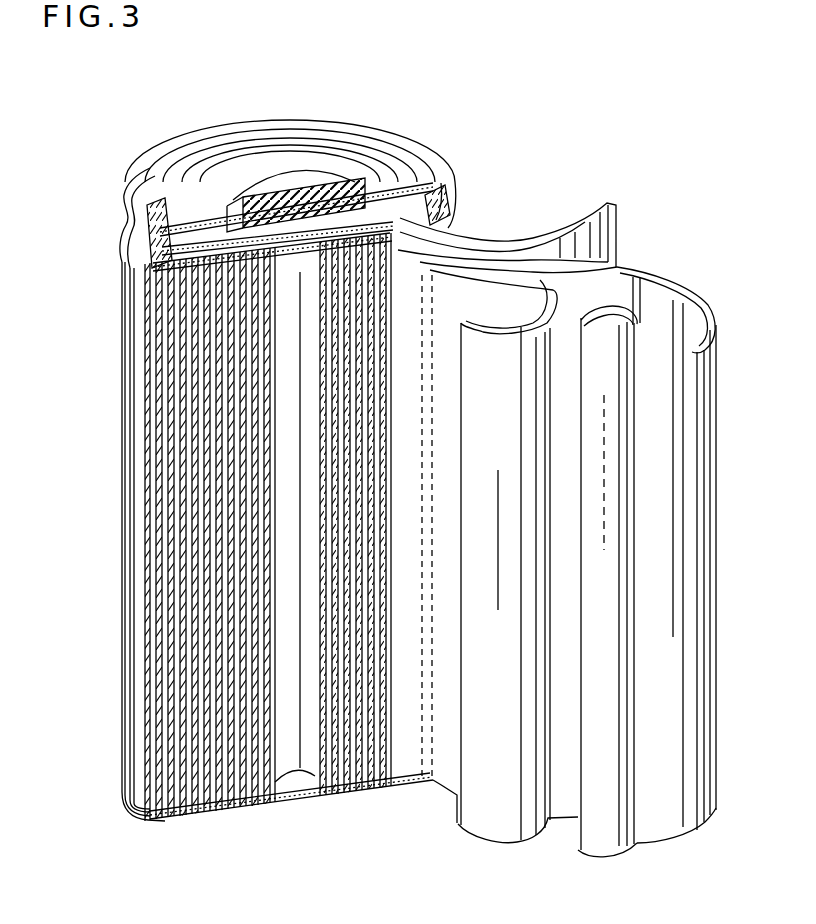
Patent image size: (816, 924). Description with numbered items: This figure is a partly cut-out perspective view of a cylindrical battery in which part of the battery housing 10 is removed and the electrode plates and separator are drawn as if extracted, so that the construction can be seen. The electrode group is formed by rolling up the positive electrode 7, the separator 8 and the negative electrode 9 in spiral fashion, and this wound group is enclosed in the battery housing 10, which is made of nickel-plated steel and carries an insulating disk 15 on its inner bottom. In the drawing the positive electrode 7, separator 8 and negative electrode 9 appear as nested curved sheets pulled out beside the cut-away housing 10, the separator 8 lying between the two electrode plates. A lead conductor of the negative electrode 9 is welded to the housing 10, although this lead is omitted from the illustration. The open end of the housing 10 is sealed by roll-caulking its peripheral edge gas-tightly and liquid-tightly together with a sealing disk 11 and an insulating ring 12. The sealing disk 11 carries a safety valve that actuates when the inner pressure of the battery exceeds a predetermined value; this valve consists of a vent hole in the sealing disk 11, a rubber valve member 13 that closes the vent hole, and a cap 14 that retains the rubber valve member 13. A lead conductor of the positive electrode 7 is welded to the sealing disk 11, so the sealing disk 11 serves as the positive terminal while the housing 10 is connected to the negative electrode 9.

The positive electrode 7 is at (530, 713).
The separator 8 is at (618, 573).
The negative electrode 9 is at (700, 452).
The battery housing 10 is at (128, 567).
The sealing disk 11 is at (398, 180).
The insulating ring 12 is at (128, 193).
The rubber valve member 13 is at (298, 162).
The cap 14 is at (243, 165).
The insulating disk 15 is at (265, 800).